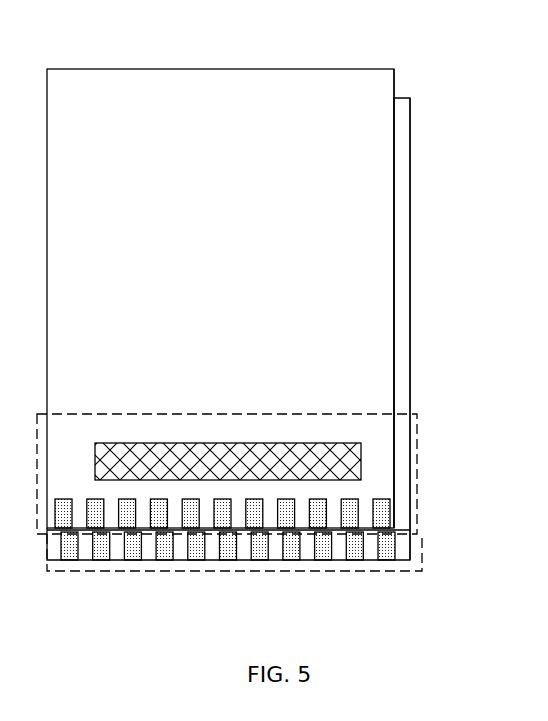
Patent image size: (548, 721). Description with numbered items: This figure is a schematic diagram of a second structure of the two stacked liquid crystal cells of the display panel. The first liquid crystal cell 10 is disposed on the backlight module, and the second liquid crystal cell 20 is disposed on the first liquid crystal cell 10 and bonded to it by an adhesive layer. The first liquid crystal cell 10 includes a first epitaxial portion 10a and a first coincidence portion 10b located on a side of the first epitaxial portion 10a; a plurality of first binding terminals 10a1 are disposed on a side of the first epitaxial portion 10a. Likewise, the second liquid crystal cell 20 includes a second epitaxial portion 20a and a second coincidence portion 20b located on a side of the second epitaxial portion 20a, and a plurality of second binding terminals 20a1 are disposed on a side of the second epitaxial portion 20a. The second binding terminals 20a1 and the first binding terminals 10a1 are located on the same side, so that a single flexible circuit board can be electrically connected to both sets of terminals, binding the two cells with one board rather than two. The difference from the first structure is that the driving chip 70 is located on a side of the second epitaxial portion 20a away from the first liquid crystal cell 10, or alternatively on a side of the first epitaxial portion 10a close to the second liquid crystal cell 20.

The second liquid crystal cell 20 is at (210, 69).
The first liquid crystal cell 10 is at (410, 197).
The first coincidence portion 10b is at (400, 283).
The second coincidence portion 20b is at (380, 367).
The driving chip 70 is at (361, 457).
The second epitaxial portion 20a is at (268, 518).
The first epitaxial portion 10a is at (276, 577).
The second binding terminals 20a1 is at (100, 533).
The first binding terminals 10a1 is at (168, 540).